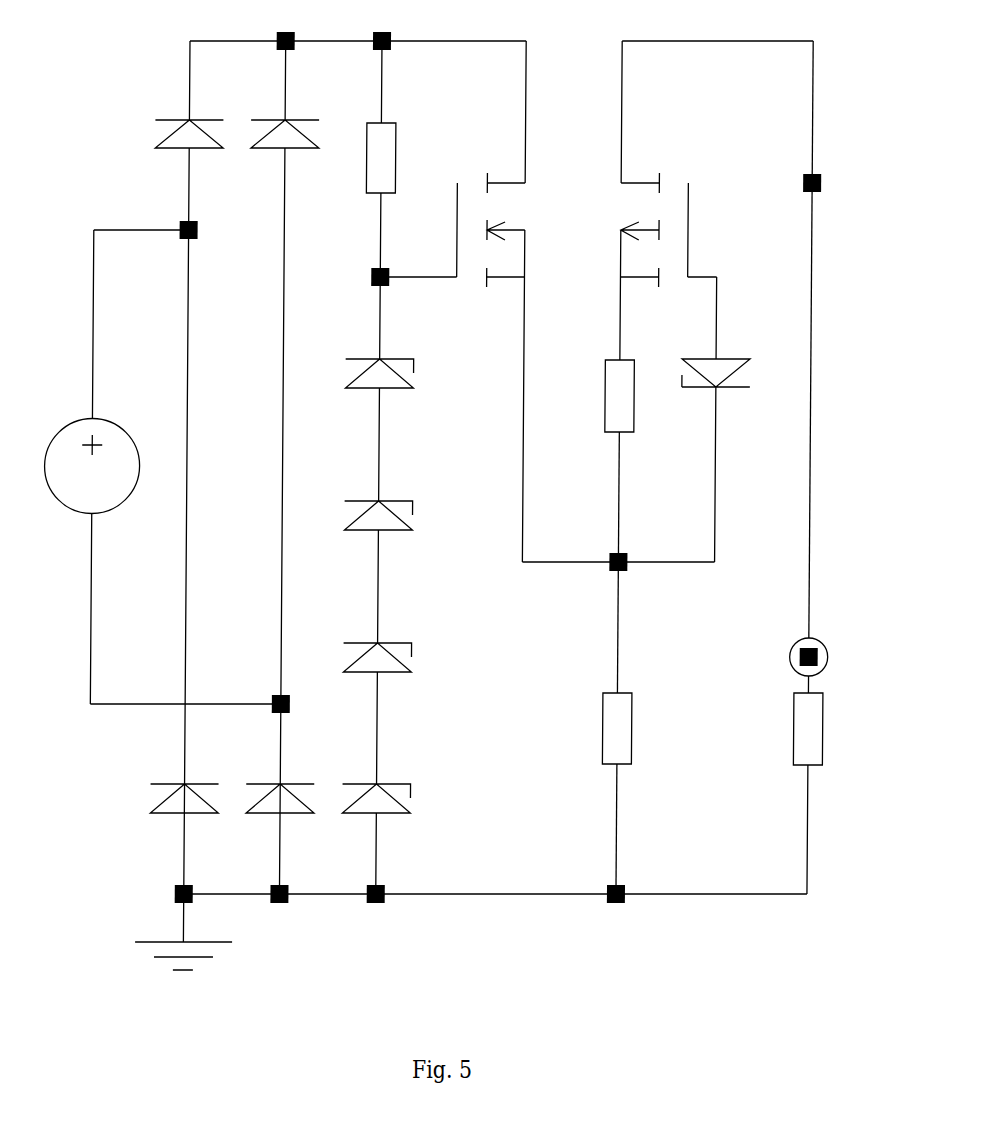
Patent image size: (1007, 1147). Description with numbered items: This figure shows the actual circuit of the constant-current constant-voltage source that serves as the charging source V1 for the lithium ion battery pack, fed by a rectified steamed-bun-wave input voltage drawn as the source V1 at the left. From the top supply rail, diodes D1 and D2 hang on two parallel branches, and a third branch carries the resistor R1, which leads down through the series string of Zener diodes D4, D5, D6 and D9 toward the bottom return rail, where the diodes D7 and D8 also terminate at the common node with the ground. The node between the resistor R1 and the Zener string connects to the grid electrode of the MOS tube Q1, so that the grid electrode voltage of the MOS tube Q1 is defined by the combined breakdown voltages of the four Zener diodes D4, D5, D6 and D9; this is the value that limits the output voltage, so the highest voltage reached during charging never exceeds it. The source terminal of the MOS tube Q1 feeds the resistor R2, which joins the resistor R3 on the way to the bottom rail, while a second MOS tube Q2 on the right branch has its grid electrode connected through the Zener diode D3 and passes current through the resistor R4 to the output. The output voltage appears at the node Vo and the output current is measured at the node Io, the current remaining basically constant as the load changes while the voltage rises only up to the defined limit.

The diode D1 is at (197, 467).
The diode D2 is at (294, 467).
The zener diode D3 is at (706, 419).
The Zener diode D4 is at (402, 429).
The Zener diode D5 is at (401, 571).
The Zener diode D6 is at (398, 712).
The diode D7 is at (196, 773).
The diode D8 is at (294, 774).
The Zener diode D9 is at (397, 823).
The resistor R1 is at (410, 200).
The resistor R2 is at (599, 506).
The resistor R3 is at (645, 777).
The resistor R4 is at (785, 785).
The MOS tube Q1 is at (452, 301).
The transistor Q2 is at (642, 200).
The charging source V1 is at (100, 467).
The output voltage node Vo is at (808, 177).
The output current node Io is at (802, 643).